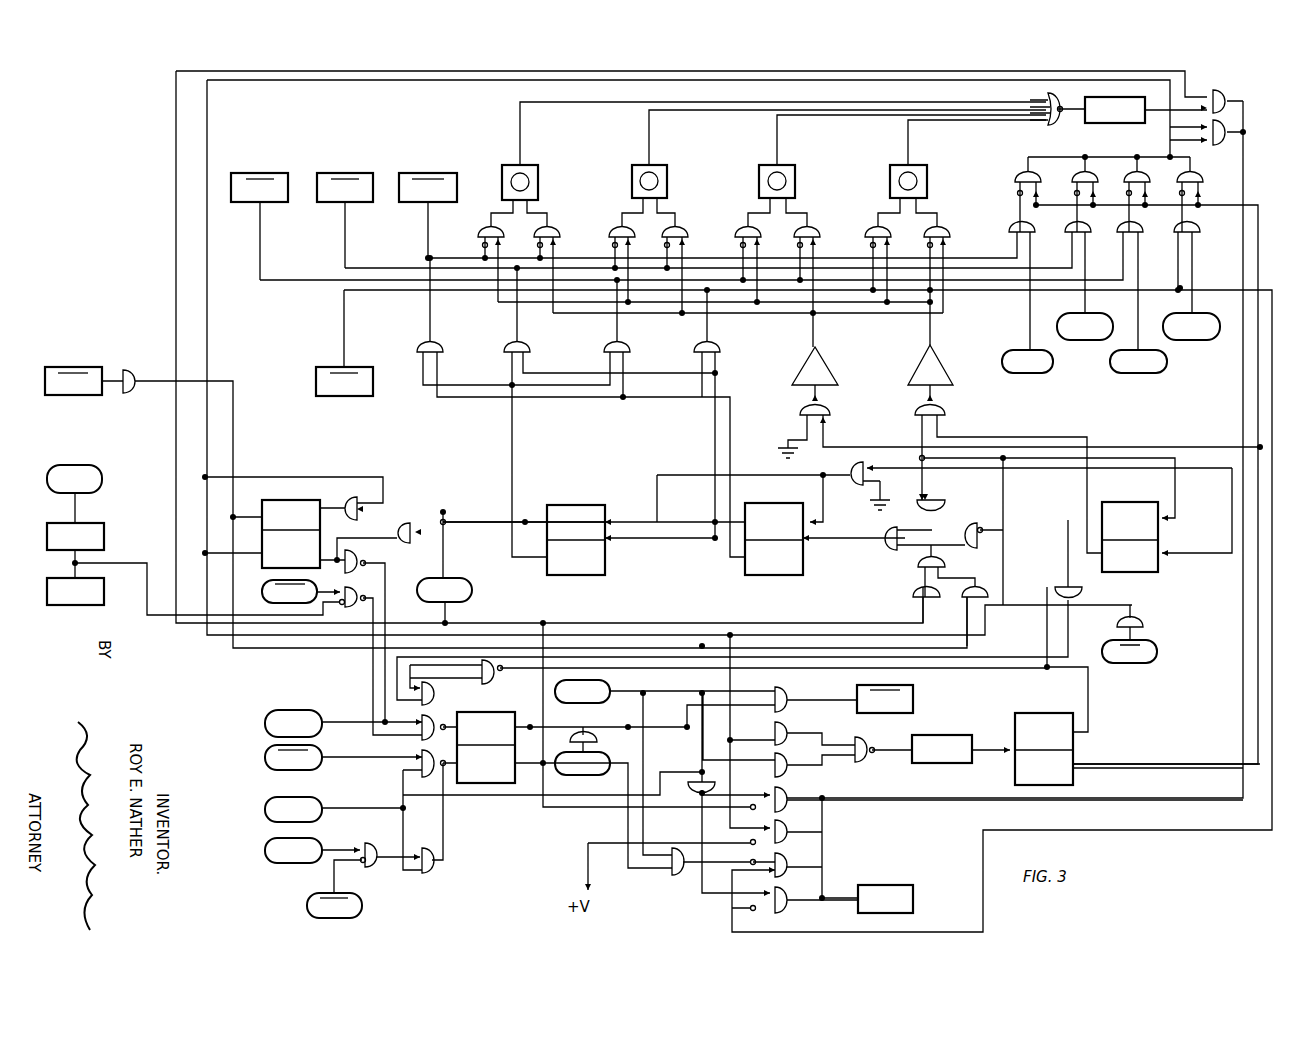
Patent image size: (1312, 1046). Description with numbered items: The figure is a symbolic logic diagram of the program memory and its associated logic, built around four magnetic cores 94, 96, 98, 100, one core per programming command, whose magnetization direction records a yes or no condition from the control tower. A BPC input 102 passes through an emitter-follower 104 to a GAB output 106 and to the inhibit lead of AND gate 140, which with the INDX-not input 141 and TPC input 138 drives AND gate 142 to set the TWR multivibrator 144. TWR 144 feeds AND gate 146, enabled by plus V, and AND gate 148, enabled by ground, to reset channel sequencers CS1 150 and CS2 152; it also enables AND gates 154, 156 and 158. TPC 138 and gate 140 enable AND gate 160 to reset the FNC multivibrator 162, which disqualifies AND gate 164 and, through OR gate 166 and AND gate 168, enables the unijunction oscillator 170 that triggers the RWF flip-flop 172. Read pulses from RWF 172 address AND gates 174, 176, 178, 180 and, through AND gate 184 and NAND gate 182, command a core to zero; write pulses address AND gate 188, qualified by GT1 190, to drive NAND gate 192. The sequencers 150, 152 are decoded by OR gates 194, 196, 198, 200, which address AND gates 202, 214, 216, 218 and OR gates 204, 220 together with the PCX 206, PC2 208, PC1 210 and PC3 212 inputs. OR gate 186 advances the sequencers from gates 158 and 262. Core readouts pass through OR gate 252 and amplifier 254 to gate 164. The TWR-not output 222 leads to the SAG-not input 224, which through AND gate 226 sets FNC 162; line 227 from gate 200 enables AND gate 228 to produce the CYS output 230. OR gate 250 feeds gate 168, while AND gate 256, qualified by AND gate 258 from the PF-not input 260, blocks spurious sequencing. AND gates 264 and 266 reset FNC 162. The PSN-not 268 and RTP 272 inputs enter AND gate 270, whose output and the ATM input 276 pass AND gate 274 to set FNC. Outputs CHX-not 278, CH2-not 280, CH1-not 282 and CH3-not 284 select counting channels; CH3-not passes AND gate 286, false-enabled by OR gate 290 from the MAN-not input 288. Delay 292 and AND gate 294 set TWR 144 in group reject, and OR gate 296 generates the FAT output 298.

The magnetic core 94 is at (530, 165).
The magnetic core 96 is at (658, 165).
The magnetic core 98 is at (786, 165).
The magnetic core 100 is at (915, 165).
The BPC input 102 is at (84, 464).
The emitter-follower 104 is at (100, 530).
The GAB output 106 is at (64, 605).
The TPC input 138 is at (268, 718).
The AND gate 140 is at (353, 607).
The INDX-not input 141 is at (278, 603).
The AND gate 142 is at (365, 562).
The TWR bistable multivibrator 144 is at (282, 500).
The AND gate 146 is at (789, 838).
The AND gate 148 is at (860, 486).
The CS1 bistable multivibrator 150 is at (764, 503).
The CS2 bistable multivibrator 152 is at (556, 505).
The AND gate 154 is at (1220, 145).
The AND gate 156 is at (349, 497).
The AND gate 158 is at (968, 548).
The AND gate 160 is at (418, 740).
The FNC bistable multivibrator 162 is at (505, 783).
The AND gate 164 is at (1218, 90).
The OR gate 166 is at (789, 773).
The AND gate 168 is at (862, 762).
The unijunction oscillator 170 is at (945, 763).
The RWF bistable multivibrator 172 is at (1028, 713).
The AND gate 174 is at (1014, 175).
The AND gate 176 is at (1072, 176).
The AND gate 178 is at (1124, 176).
The AND gate 180 is at (1203, 177).
The NAND gate 182 is at (826, 366).
The AND gate 184 is at (802, 412).
The OR gate 186 is at (885, 548).
The AND gate 188 is at (917, 412).
The GT1 bistable multivibrator 190 is at (1110, 502).
The NAND gate 192 is at (941, 366).
The OR gate 194 is at (443, 350).
The OR gate 196 is at (530, 350).
The OR gate 198 is at (630, 350).
The OR gate 200 is at (720, 350).
The AND gate 202 is at (478, 228).
The OR gate 204 is at (1010, 228).
The PCX input 206 is at (1048, 372).
The PC2 input 208 is at (1156, 372).
The PC1 input 210 is at (1098, 348).
The PC3 input 212 is at (1198, 340).
The AND gate 214 is at (554, 226).
The AND gate 216 is at (607, 225).
The AND gate 218 is at (681, 226).
The OR gate 220 is at (1091, 230).
The TWR-not output 222 is at (73, 366).
The SAG-not input 224 is at (316, 770).
The AND gate 226 is at (436, 775).
The channel three line 227 is at (1210, 285).
The AND gate 228 is at (788, 912).
The CYS output 230 is at (884, 885).
The OR gate 250 is at (789, 728).
The OR gate 252 is at (1046, 99).
The amplifier 254 is at (1102, 123).
The AND gate 256 is at (918, 565).
The AND gate 258 is at (962, 592).
The PF-not input 260 is at (1157, 654).
The AND gate 262 is at (945, 506).
The AND gate 264 is at (438, 693).
The AND gate 266 is at (482, 672).
The PSN-not input 268 is at (362, 912).
The AND gate 270 is at (370, 868).
The RTP input 272 is at (320, 846).
The AND gate 274 is at (428, 872).
The ATM input 276 is at (322, 805).
The CHX-not output 278 is at (421, 172).
The CH2-not output 280 is at (250, 172).
The CH1-not output 282 is at (336, 172).
The CH3-not output 284 is at (334, 396).
The AND gate 286 is at (789, 862).
The MAN-not input 288 is at (610, 690).
The OR gate 290 is at (674, 873).
The delay 292 is at (472, 590).
The AND gate 294 is at (408, 523).
The OR gate 296 is at (782, 690).
The FAT output 298 is at (913, 695).